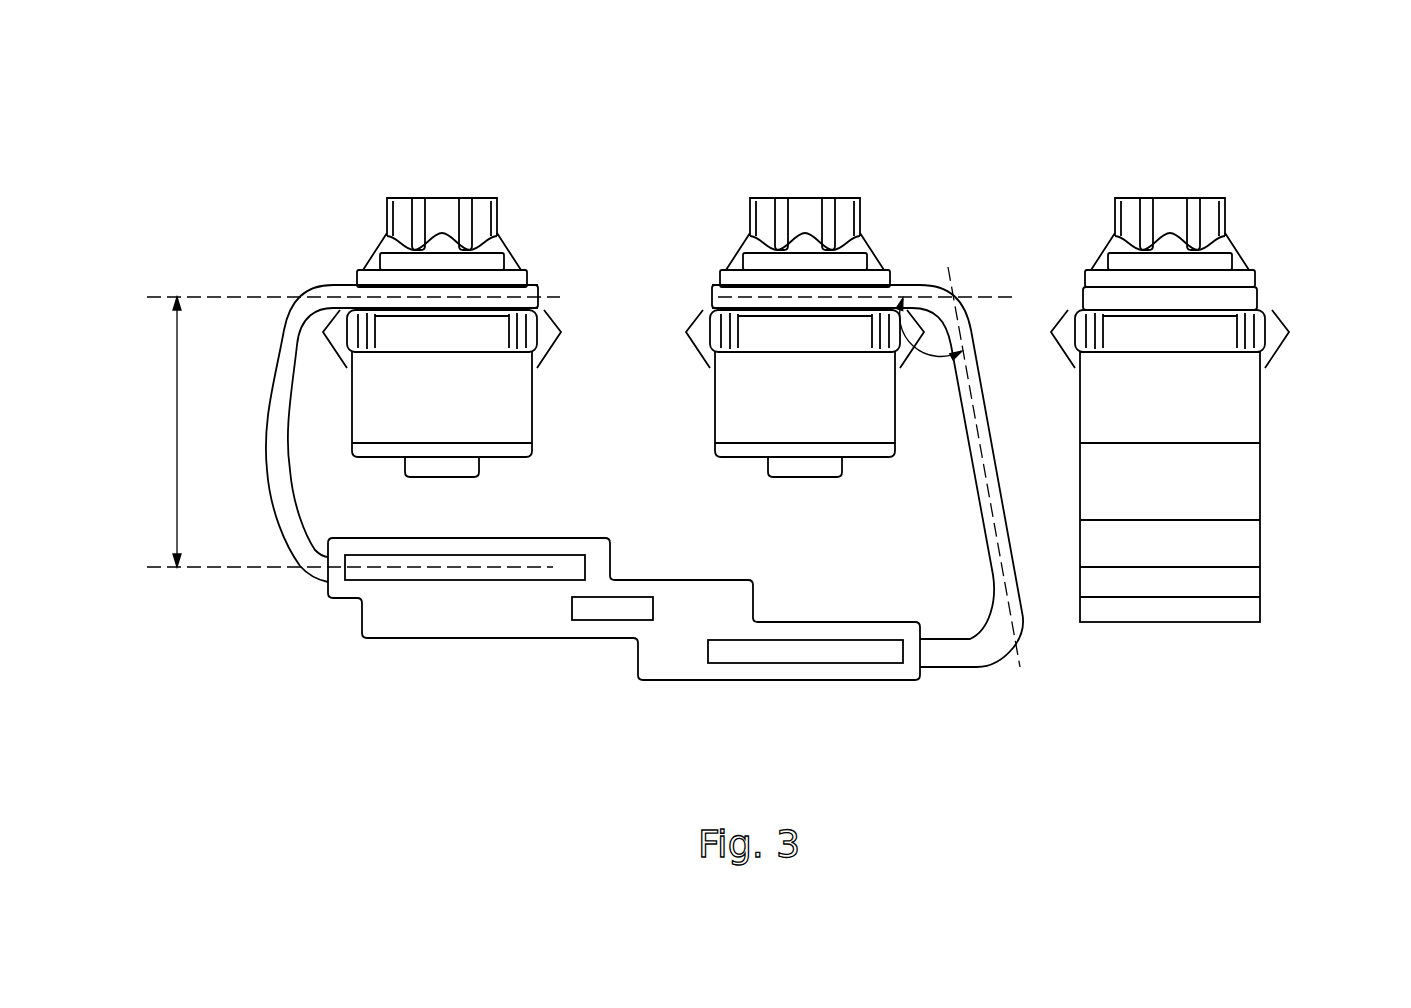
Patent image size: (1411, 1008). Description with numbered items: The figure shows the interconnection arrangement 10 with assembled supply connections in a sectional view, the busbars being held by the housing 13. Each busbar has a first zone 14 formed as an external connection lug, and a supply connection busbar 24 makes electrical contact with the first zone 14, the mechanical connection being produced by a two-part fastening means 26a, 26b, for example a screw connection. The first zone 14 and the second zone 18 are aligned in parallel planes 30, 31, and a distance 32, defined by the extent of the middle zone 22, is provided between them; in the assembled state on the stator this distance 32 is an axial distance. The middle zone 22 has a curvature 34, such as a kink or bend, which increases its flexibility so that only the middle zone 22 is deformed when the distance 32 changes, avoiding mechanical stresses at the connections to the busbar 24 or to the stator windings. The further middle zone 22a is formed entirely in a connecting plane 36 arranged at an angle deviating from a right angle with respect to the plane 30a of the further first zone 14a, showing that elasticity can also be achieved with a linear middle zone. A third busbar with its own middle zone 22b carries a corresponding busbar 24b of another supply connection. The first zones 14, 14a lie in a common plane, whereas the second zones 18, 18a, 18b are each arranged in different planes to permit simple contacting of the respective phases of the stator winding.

The interconnection arrangement 10 is at (283, 143).
The housing 13 is at (590, 545).
The first zone 14 is at (527, 297).
The further first zone 14a is at (895, 290).
The second zone 18 is at (435, 573).
The second zone 18a is at (805, 652).
The second zone 18b is at (612, 607).
The middle zone 22 is at (283, 373).
The further middle zone 22a is at (973, 450).
The middle zone 22b is at (1247, 298).
The busbar 24 is at (483, 335).
The busbar 24b is at (1210, 333).
The fastening means 26a is at (438, 212).
The fastening means 26b is at (483, 403).
The plane 30 is at (220, 297).
The plane 30a is at (985, 297).
The plane 31 is at (258, 568).
The distance 32 is at (177, 435).
The curvature 34 is at (265, 430).
The connecting plane 36 is at (1018, 660).